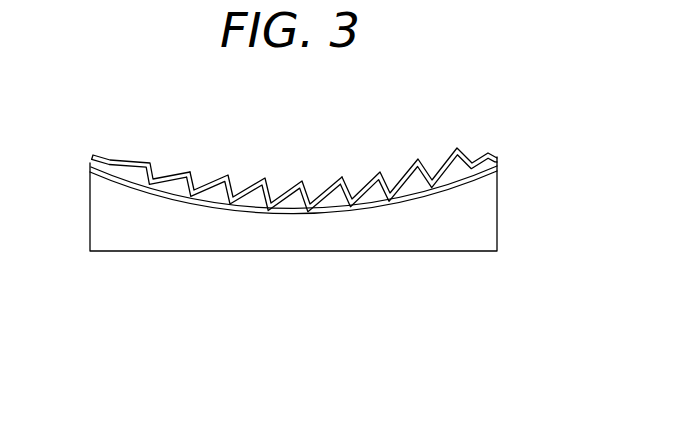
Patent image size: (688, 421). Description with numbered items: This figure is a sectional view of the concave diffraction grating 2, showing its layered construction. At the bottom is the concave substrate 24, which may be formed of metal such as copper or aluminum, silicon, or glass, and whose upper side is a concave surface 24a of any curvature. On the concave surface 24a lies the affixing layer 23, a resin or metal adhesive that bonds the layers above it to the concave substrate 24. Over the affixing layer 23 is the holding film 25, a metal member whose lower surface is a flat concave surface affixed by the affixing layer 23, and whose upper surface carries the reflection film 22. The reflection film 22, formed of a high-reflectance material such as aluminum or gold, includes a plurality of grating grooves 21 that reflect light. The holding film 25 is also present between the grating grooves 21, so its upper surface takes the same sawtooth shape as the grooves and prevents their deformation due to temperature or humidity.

The concave diffraction grating 2 is at (113, 262).
The grating grooves 21 is at (393, 173).
The reflection film 22 is at (133, 158).
The affixing layer 23 is at (336, 212).
The concave substrate 24 is at (217, 238).
The concave surface 24a is at (276, 214).
The holding film 25 is at (180, 178).